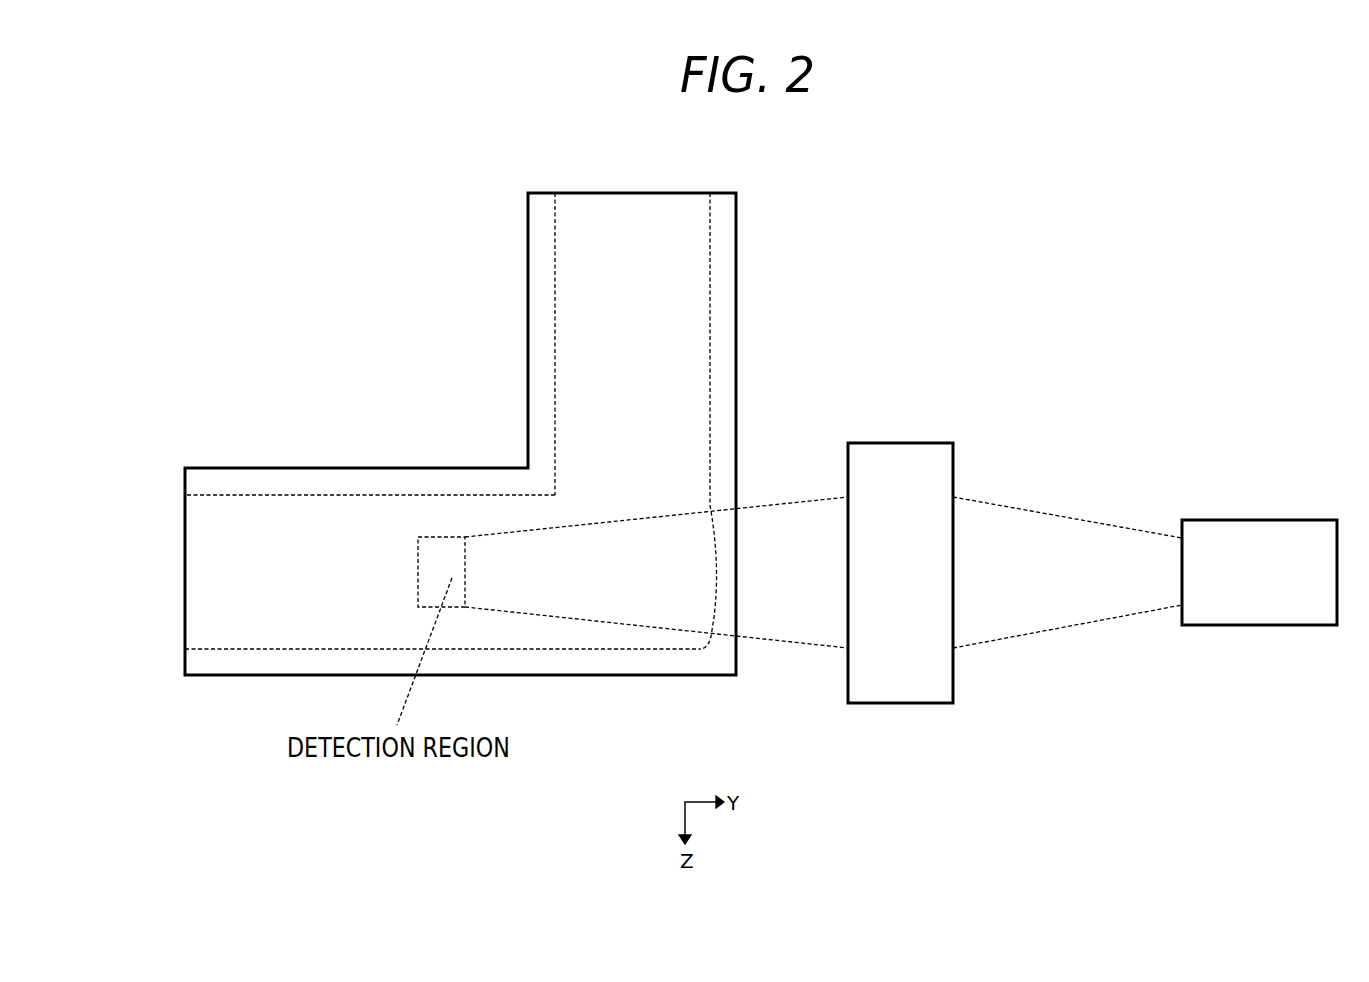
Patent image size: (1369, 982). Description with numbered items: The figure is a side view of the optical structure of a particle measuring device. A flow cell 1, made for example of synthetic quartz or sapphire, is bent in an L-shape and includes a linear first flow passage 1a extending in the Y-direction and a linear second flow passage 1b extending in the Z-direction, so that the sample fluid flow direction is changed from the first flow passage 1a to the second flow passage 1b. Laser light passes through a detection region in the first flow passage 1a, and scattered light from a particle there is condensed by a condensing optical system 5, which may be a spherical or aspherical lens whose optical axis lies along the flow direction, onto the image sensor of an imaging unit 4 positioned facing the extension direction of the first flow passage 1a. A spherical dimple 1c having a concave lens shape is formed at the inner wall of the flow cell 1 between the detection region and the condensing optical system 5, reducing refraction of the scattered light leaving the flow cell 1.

The flow cell 1 is at (737, 242).
The first flow passage 1a is at (203, 560).
The second flow passage 1b is at (625, 217).
The spherical dimple 1c is at (737, 590).
The imaging unit 4 is at (1255, 530).
The condensing optical system 5 is at (900, 440).